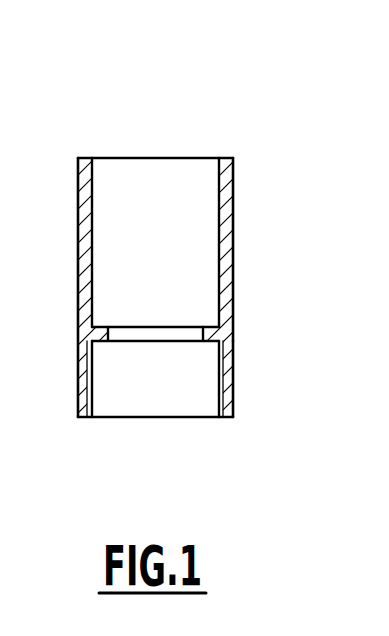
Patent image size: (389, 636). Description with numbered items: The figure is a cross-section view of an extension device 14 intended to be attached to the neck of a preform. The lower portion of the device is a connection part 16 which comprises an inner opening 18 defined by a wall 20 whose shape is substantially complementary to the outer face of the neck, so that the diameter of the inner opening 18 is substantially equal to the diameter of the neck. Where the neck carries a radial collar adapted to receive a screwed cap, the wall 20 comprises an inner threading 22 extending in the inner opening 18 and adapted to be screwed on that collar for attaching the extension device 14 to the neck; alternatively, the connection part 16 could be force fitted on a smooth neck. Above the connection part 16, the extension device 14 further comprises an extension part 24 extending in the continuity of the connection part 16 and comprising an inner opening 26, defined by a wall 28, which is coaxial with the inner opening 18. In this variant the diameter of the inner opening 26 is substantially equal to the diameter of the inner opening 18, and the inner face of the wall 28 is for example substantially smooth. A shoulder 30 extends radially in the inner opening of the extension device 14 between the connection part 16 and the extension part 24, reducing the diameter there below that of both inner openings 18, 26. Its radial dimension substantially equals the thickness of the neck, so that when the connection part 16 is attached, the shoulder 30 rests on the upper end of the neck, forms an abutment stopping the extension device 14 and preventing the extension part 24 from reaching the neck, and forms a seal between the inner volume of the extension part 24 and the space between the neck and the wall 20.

The extension device 14 is at (110, 128).
The connection part 16 is at (188, 362).
The inner opening 18 is at (125, 422).
The wall 20 is at (233, 412).
The inner threading 22 is at (222, 400).
The extension part 24 is at (183, 275).
The inner opening 26 is at (172, 157).
The wall 28 is at (233, 168).
The shoulder 30 is at (98, 346).